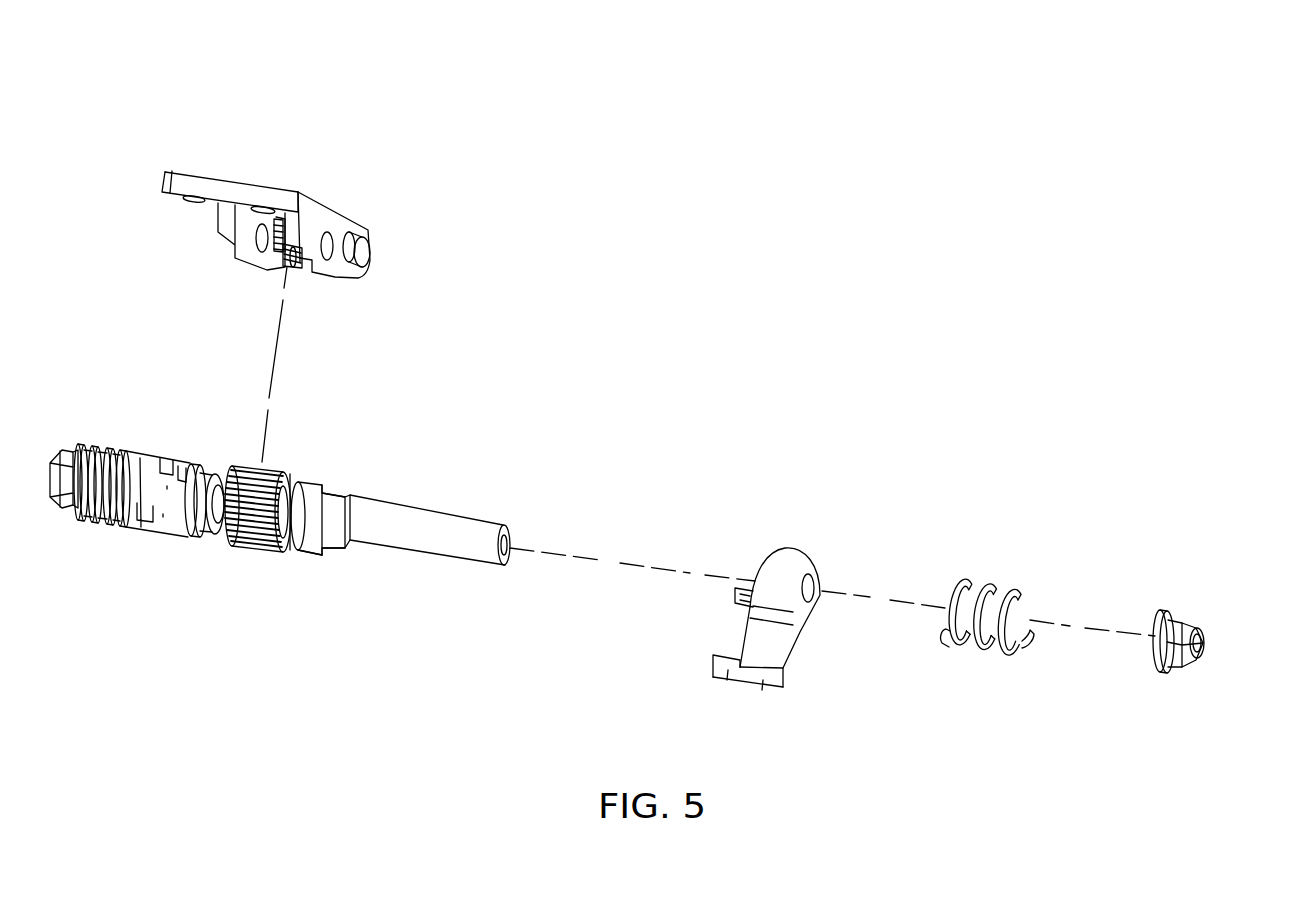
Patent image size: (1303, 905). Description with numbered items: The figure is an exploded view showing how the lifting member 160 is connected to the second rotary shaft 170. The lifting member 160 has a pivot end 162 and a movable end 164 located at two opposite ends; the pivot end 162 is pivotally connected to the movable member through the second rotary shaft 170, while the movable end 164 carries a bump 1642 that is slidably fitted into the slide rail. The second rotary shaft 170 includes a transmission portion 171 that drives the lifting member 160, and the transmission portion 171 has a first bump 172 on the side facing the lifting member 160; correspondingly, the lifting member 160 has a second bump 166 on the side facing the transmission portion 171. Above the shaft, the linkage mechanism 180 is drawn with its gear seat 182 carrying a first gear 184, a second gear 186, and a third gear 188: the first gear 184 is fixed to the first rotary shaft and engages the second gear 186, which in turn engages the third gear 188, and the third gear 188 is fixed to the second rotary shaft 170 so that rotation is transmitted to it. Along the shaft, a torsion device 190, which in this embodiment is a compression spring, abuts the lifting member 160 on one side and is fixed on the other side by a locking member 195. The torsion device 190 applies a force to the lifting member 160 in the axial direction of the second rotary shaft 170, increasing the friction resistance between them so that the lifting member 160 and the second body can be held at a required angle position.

The lifting member 160 is at (749, 553).
The pivot end 162 is at (789, 553).
The movable end 164 is at (768, 682).
The bump 1642 is at (730, 672).
The second bump 166 is at (733, 598).
The second rotary shaft 170 is at (372, 498).
The transmission portion 171 is at (300, 554).
The first bump 172 is at (352, 482).
The linkage mechanism 180 is at (173, 145).
The gear seat 182 is at (233, 168).
The first gear 184 is at (304, 274).
The second gear 186 is at (277, 267).
The third gear 188 is at (275, 462).
The torsion device 190 is at (976, 582).
The locking member 195 is at (1205, 634).